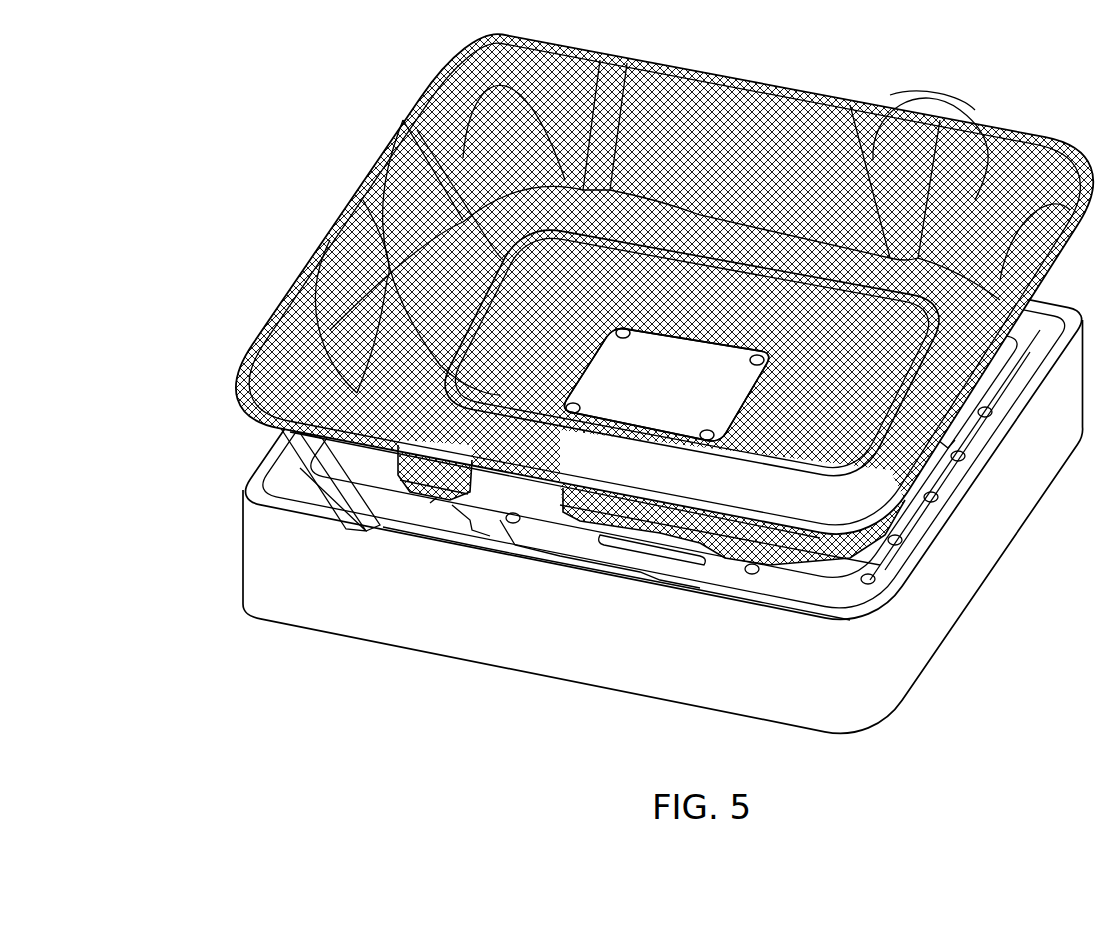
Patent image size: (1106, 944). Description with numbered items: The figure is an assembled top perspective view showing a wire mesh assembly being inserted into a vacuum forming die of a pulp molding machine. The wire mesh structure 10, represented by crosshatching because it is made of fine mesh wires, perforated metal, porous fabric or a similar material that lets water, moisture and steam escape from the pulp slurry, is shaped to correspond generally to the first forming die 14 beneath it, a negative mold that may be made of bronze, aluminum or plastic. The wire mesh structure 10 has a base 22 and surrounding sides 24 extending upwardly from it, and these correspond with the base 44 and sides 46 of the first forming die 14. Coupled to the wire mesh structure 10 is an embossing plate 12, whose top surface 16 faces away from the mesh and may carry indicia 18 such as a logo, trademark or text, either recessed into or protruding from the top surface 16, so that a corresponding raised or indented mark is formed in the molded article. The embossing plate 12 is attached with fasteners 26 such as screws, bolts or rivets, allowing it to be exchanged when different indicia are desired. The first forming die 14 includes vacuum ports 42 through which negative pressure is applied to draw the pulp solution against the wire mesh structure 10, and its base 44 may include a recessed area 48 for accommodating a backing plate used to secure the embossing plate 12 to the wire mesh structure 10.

The wire mesh structure 10 is at (664, 299).
The embossing plate 12 is at (673, 351).
The first forming die 14 is at (622, 461).
The top surface 16 is at (661, 383).
The indicia 18 is at (666, 366).
The base 22 is at (441, 257).
The sides 24 is at (690, 221).
The fasteners 26 is at (679, 376).
The vacuum ports 42 is at (858, 559).
The base 44 is at (500, 495).
The sides 46 is at (322, 479).
The recessed area 48 is at (627, 551).